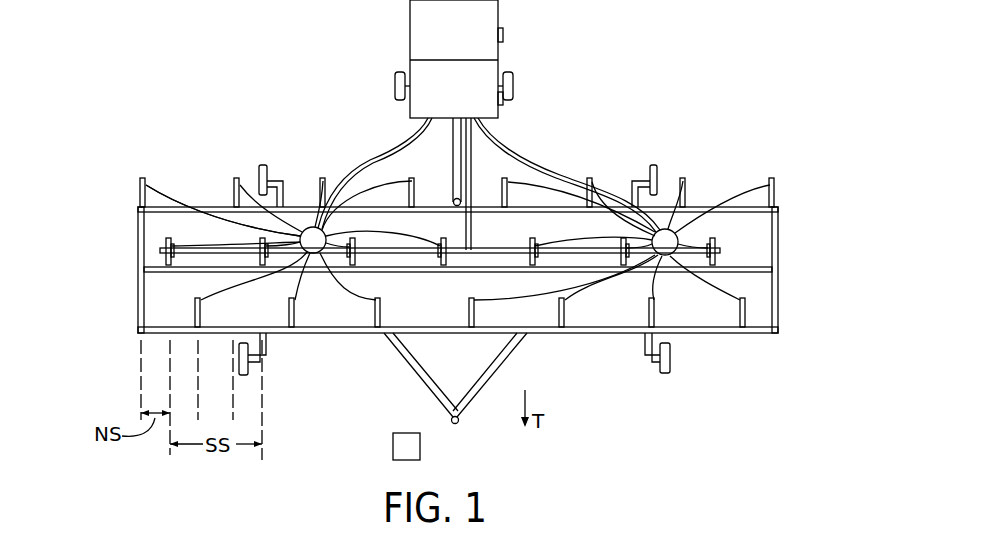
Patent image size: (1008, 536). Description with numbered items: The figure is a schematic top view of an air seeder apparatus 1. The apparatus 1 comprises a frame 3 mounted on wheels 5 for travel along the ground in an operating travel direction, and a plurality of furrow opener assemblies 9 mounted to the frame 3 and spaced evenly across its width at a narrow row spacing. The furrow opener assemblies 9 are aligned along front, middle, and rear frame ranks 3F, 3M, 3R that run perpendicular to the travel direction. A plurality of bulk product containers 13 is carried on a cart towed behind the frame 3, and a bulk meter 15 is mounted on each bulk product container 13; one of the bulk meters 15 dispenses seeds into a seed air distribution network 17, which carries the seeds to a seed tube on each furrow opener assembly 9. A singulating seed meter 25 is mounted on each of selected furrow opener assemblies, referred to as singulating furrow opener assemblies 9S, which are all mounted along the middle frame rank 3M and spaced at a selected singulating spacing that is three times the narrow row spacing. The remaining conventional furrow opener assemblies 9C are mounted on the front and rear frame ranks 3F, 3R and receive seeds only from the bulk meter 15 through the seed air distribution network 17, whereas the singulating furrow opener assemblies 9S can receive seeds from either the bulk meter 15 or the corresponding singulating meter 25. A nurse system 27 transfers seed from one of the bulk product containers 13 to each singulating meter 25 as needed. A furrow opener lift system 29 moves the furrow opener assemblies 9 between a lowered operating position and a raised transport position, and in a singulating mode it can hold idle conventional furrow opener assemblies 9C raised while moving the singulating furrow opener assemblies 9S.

The air seeder apparatus 1 is at (637, 64).
The frame 3 is at (137, 304).
The rear frame rank 3R is at (779, 211).
The middle frame rank 3M is at (779, 266).
The front frame rank 3F is at (779, 330).
The wheels 5 is at (671, 364).
The furrow opener assemblies 9 is at (236, 187).
The conventional furrow opener assemblies 9C is at (688, 184).
The singulating furrow opener assemblies 9S is at (718, 250).
The bulk product containers 13 is at (424, 36).
The bulk meter 15 is at (503, 32).
The seed air distribution network 17 is at (378, 141).
The singulating seed meter 25 is at (160, 250).
The nurse system 27 is at (208, 242).
The furrow opener lift system 29 is at (420, 448).